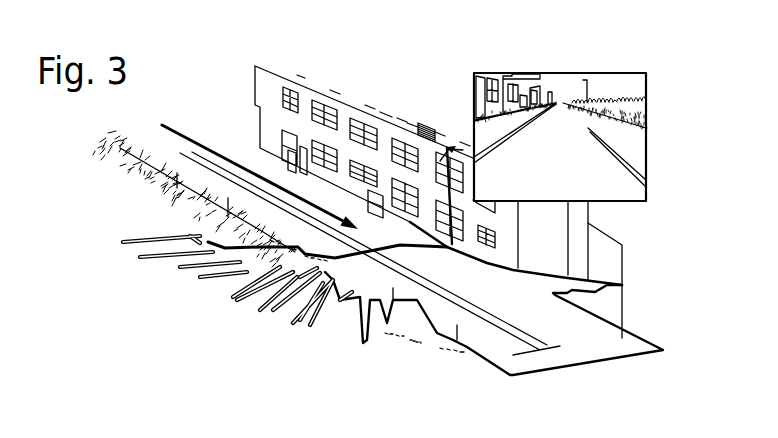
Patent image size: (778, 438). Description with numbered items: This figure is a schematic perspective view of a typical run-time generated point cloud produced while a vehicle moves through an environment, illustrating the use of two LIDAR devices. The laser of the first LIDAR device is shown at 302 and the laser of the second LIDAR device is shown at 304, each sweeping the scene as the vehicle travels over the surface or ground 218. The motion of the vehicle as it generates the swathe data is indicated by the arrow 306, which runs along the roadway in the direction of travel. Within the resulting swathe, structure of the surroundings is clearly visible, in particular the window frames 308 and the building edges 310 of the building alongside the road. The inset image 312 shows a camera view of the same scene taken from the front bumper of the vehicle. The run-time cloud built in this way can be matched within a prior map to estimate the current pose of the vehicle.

The surface/ground 218 is at (575, 330).
The laser of the first LIDAR device 302 is at (447, 148).
The laser of the second LIDAR device 304 is at (213, 283).
The arrow 306 is at (181, 134).
The window frames 308 is at (466, 232).
The building edges 310 is at (447, 248).
The inset image 312 is at (654, 122).